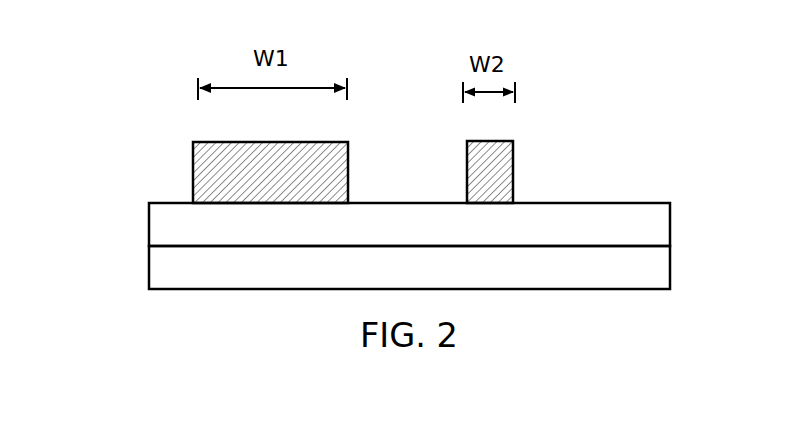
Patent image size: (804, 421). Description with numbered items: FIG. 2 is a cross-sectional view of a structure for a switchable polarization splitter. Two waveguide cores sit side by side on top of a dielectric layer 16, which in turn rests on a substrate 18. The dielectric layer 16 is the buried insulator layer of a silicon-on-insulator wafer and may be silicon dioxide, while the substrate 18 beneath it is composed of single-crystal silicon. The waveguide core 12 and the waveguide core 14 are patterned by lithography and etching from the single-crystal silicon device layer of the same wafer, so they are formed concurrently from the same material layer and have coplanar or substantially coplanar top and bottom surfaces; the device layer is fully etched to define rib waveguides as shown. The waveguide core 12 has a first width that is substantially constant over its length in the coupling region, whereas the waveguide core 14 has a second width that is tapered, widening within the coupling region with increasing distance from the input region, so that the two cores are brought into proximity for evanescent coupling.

The waveguide core 12 is at (270, 172).
The waveguide core 14 is at (487, 175).
The dielectric layer 16 is at (173, 222).
The substrate 18 is at (176, 272).